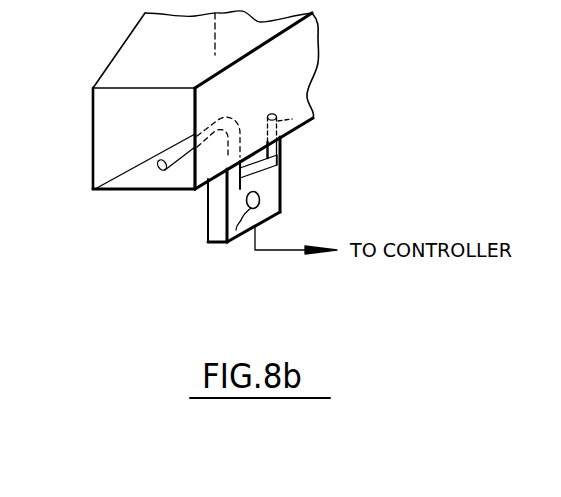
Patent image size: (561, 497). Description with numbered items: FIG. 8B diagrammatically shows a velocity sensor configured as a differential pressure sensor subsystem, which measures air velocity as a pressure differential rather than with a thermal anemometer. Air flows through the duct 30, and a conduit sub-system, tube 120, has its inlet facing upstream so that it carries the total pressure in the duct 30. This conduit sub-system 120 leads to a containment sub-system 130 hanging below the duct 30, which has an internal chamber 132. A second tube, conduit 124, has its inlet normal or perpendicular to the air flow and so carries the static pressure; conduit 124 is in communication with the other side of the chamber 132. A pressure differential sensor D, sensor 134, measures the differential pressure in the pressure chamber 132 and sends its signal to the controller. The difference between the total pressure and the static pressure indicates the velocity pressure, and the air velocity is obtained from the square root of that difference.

The duct 30 is at (160, 43).
The tube 120 is at (178, 163).
The second tube 124 is at (292, 119).
The containment sub-system 130 is at (208, 232).
The internal chamber 132 is at (244, 232).
The pressure differential sensor 134 is at (260, 195).